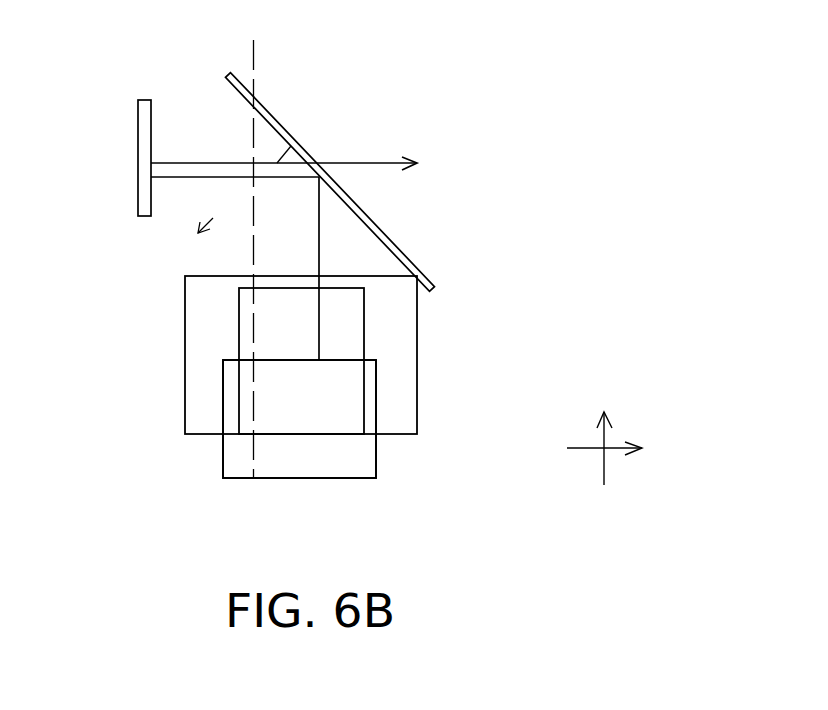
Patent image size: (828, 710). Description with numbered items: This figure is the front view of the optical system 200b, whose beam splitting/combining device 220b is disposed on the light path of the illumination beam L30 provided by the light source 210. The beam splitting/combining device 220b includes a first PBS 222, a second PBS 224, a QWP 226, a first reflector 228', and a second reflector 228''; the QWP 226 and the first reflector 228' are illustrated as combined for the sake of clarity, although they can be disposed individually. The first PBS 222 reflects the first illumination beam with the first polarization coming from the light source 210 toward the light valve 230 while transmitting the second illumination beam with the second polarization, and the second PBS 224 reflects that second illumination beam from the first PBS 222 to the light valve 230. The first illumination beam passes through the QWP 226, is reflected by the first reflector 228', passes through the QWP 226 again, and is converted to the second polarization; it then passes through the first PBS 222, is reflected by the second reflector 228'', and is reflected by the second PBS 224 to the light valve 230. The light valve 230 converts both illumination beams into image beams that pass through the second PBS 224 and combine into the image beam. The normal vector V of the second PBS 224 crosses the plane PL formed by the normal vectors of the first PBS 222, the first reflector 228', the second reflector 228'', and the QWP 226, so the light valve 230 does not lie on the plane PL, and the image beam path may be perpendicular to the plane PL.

The optical system 200b is at (658, 581).
The beam splitting/combining device 220b is at (540, 213).
The light valve 230 is at (147, 100).
The second PBS 224 is at (228, 72).
The plane PL is at (253, 66).
The illumination beam L30 is at (319, 252).
The normal vector V is at (255, 180).
The first PBS 222 is at (193, 303).
The QWP 226 is at (352, 323).
The first reflector 228' is at (301, 361).
The second reflector 228'' is at (381, 419).
The light source 210 is at (360, 459).